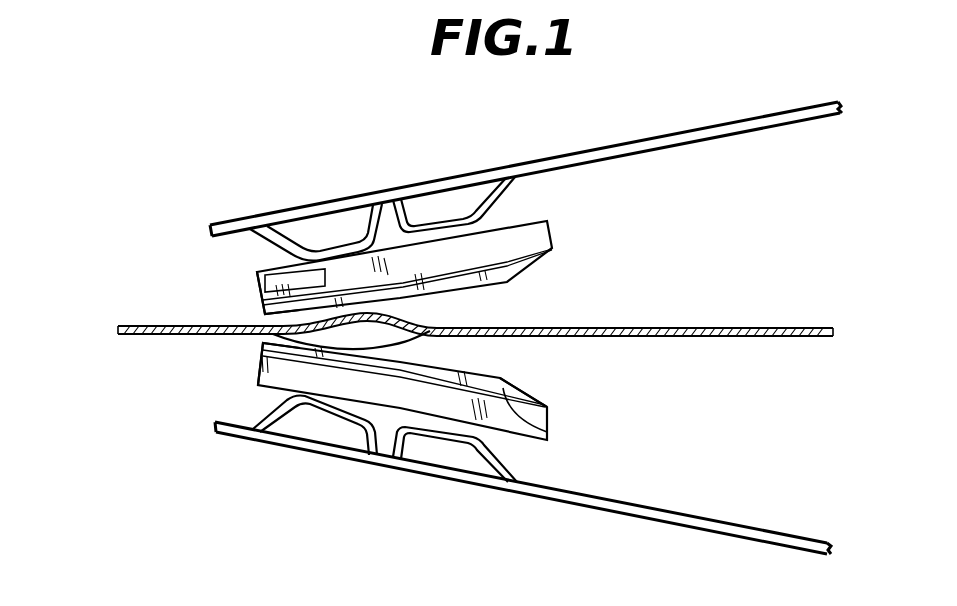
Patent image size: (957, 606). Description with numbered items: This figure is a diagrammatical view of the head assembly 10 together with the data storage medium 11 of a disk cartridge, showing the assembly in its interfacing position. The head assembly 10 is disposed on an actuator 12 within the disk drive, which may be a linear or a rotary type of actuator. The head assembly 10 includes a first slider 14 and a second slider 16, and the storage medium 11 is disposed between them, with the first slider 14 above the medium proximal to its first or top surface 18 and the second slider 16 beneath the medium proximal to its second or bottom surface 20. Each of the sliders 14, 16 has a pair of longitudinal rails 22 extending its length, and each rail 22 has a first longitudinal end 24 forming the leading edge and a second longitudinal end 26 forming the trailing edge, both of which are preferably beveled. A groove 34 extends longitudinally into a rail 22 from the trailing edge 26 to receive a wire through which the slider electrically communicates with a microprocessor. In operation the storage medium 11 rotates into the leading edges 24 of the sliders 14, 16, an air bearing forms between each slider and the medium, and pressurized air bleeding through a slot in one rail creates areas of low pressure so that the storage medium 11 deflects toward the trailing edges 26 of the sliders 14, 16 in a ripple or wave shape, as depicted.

The head assembly 10 is at (138, 200).
The data storage medium 11 is at (418, 340).
The actuator 12 is at (737, 122).
The first slider 14 is at (540, 232).
The second slider 16 is at (508, 447).
The first surface 18 is at (670, 327).
The second surface 20 is at (697, 335).
The longitudinal rail 22 is at (548, 434).
The first longitudinal end 24 is at (520, 397).
The second longitudinal end 26 is at (262, 318).
The groove 34 is at (262, 284).